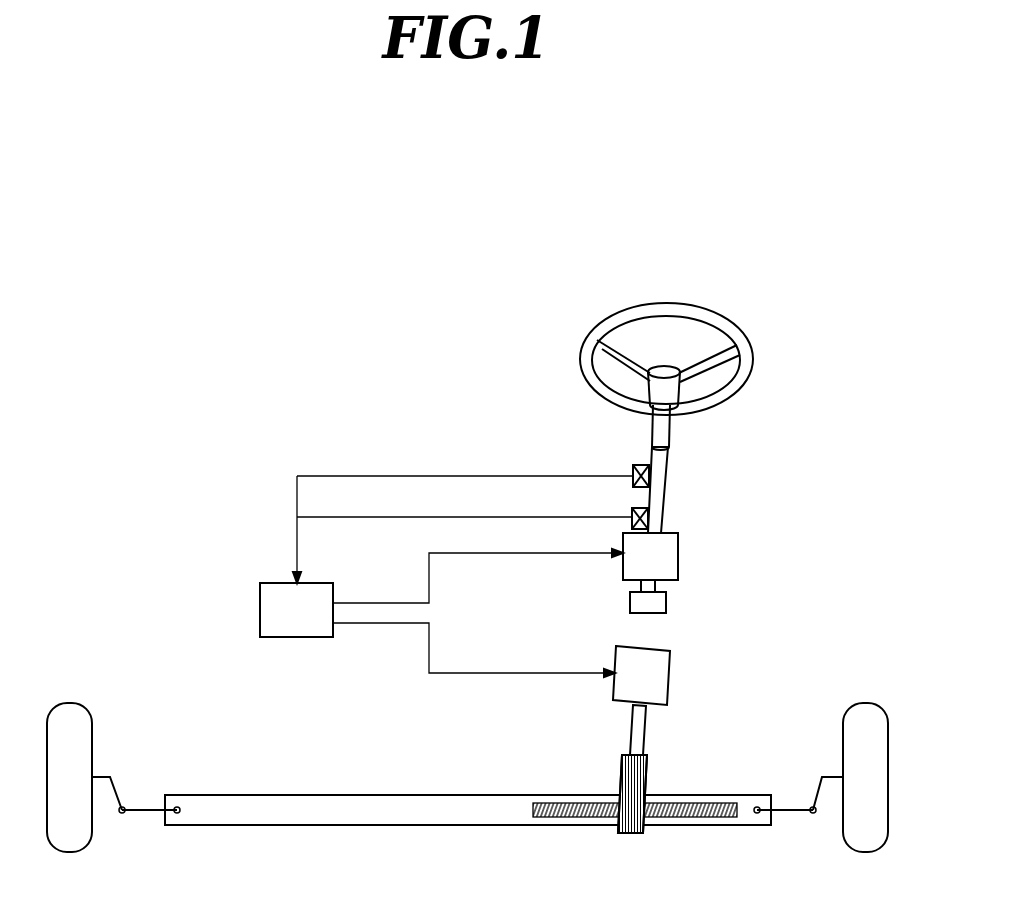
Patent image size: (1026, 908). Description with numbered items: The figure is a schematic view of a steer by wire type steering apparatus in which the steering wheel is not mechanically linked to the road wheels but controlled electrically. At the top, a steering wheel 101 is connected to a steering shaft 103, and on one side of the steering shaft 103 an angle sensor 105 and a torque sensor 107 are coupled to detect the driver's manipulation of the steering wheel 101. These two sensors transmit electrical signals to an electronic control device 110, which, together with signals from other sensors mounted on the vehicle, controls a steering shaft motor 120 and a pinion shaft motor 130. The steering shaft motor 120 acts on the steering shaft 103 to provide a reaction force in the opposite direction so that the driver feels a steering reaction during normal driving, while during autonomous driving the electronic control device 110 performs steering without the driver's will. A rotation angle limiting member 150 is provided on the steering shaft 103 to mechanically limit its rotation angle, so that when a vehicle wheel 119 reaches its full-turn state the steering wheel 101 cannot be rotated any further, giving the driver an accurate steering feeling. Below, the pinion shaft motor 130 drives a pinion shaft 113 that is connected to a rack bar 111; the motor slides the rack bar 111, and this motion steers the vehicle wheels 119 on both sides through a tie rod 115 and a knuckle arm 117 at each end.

The steering wheel 101 is at (745, 365).
The steering shaft 103 is at (665, 491).
The angle sensor 105 is at (633, 467).
The torque sensor 107 is at (632, 510).
The electronic control device 110 is at (260, 612).
The rack bar 111 is at (380, 815).
The pinion shaft 113 is at (650, 767).
The tie rod 115 is at (137, 813).
The knuckle arm 117 is at (122, 790).
The vehicle wheel 119 is at (92, 731).
The steering shaft motor 120 is at (678, 558).
The pinion shaft motor 130 is at (670, 663).
The rotation angle limiting member 150 is at (662, 604).